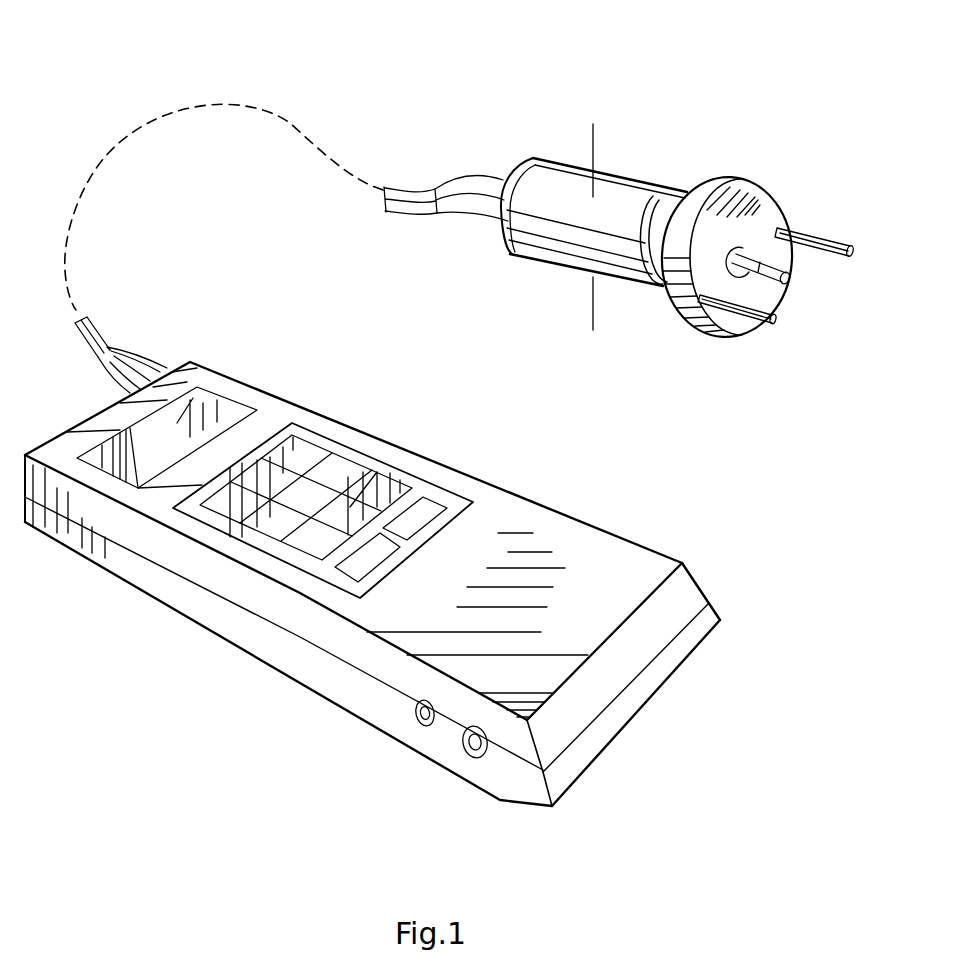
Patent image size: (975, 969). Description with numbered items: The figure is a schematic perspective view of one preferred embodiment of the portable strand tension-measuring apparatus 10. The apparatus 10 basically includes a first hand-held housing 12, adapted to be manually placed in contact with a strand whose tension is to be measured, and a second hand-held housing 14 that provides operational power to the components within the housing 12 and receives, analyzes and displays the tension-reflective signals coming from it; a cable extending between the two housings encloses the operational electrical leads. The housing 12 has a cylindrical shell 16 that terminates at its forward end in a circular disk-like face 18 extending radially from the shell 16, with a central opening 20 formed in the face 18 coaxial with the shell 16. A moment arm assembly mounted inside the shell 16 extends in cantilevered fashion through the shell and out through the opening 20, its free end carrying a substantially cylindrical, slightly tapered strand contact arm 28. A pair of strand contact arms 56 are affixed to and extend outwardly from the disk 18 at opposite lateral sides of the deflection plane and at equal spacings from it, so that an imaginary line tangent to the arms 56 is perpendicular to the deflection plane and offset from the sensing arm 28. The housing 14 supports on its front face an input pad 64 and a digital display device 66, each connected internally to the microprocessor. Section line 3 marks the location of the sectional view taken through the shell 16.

The tension-measuring apparatus 10 is at (122, 97).
The first hand-held housing 12 is at (533, 257).
The second hand-held housing 14 is at (358, 428).
The cylindrical shell 16 is at (621, 196).
The circular disk-like face 18 is at (767, 220).
The central opening 20 is at (740, 250).
The strand contact arm 28 is at (792, 286).
The strand contact arms 56 is at (853, 251).
The input pad 64 is at (400, 476).
The digital display device 66 is at (233, 398).
The section line 3- 3 is at (633, 88).